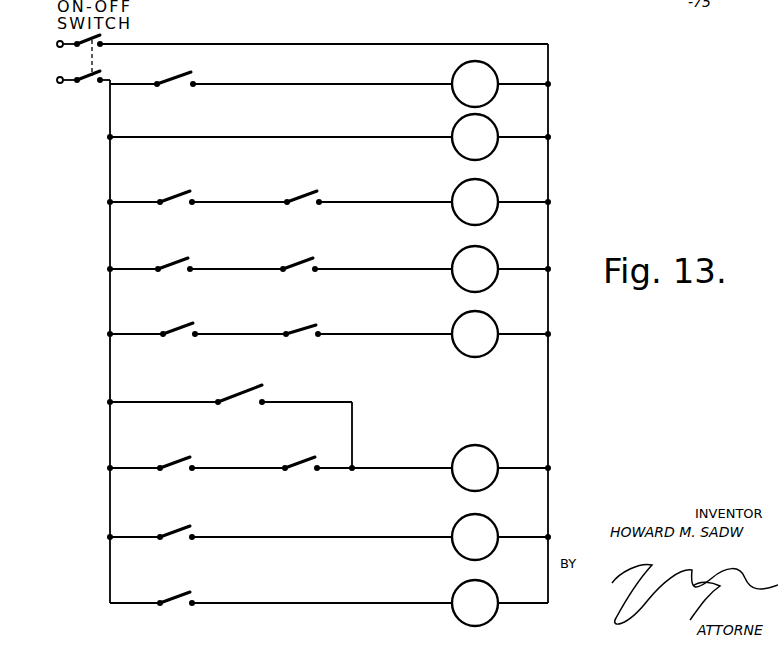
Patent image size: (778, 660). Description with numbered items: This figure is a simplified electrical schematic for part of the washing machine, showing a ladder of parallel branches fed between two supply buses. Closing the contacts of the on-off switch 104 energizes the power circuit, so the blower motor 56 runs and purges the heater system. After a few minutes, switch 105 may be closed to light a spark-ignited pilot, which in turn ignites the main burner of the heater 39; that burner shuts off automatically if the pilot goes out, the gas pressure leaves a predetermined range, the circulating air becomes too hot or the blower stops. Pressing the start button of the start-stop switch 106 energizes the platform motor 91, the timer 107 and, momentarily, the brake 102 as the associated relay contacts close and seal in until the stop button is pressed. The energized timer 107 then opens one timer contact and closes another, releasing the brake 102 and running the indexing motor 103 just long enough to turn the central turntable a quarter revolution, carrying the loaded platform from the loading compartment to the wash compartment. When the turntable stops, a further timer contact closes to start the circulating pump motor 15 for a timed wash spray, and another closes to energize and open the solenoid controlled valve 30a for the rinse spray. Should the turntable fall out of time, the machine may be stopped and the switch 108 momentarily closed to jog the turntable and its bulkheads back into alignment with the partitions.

The on-off switch 104 is at (84, 85).
The switch 105 is at (176, 88).
The start-stop switch 106 is at (193, 388).
The timer 107 is at (508, 620).
The switch 108 is at (244, 405).
The heater 39 is at (492, 68).
The blower motor 56 is at (492, 121).
The circulating pump motor 15 is at (492, 188).
The solenoid controlled valve 30a is at (492, 254).
The brake 102 is at (492, 318).
The indexing motor 103 is at (492, 453).
The platform motor 91 is at (492, 521).